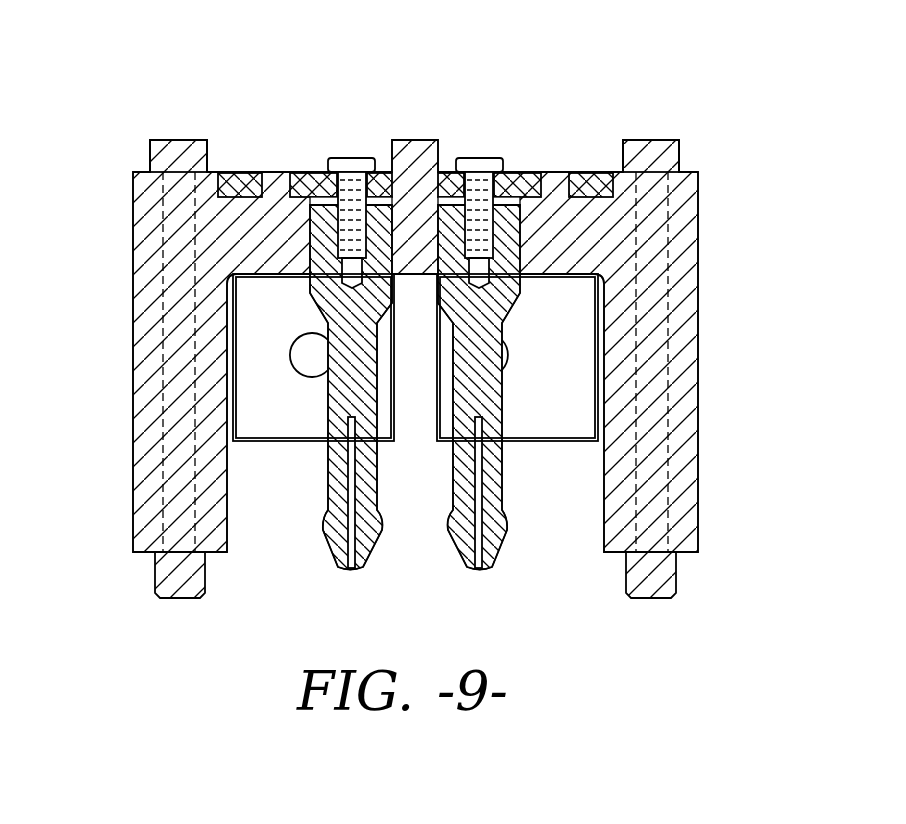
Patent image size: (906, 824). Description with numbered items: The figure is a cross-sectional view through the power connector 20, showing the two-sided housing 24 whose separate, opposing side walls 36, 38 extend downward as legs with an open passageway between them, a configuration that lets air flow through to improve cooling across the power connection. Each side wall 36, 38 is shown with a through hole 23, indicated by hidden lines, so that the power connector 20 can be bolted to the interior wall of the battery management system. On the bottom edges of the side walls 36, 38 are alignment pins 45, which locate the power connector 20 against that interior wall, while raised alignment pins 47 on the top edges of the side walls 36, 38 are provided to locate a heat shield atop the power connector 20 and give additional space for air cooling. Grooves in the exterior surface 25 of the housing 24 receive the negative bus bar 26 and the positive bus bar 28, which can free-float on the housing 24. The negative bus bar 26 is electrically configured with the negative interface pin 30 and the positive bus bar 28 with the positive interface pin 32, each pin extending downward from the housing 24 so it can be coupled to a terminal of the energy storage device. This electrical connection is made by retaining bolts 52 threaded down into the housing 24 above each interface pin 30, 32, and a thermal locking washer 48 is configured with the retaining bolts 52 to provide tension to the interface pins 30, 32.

The power connector 20 is at (700, 70).
The through holes 23 is at (163, 267).
The housing 24 is at (140, 168).
The exterior surface 25 is at (275, 172).
The negative bus bar 26 is at (303, 442).
The positive bus bar 28 is at (527, 442).
The negative interface pin 30 is at (323, 538).
The positive interface pin 32 is at (507, 538).
The side wall 36 is at (132, 358).
The side wall 38 is at (699, 358).
The alignment pins 45 is at (153, 570).
The alignment pins 47 is at (157, 138).
The thermal locking washer 48 is at (503, 200).
The retaining bolts 52 is at (352, 157).